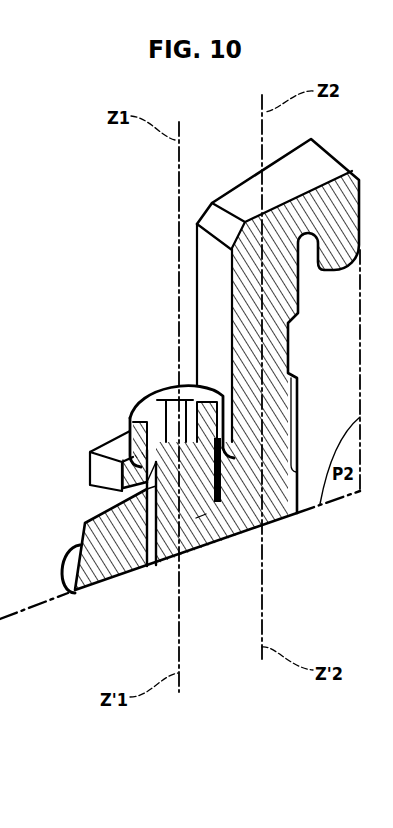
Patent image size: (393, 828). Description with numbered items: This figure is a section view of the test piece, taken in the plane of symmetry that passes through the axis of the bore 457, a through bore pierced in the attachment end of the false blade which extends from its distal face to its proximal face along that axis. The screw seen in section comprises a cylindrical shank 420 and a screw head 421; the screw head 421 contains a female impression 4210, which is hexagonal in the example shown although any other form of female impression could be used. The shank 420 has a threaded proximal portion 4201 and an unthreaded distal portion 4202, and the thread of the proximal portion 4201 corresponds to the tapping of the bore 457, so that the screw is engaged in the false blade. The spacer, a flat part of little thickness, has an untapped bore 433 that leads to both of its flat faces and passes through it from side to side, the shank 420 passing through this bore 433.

The cylindrical shank 420 is at (199, 517).
The threaded proximal portion 4201 is at (135, 537).
The unthreaded distal portion 4202 is at (145, 488).
The screw head 421 is at (147, 457).
The female impression 4210 is at (169, 398).
The untapped bore 433 is at (202, 463).
The bore 457 is at (200, 513).